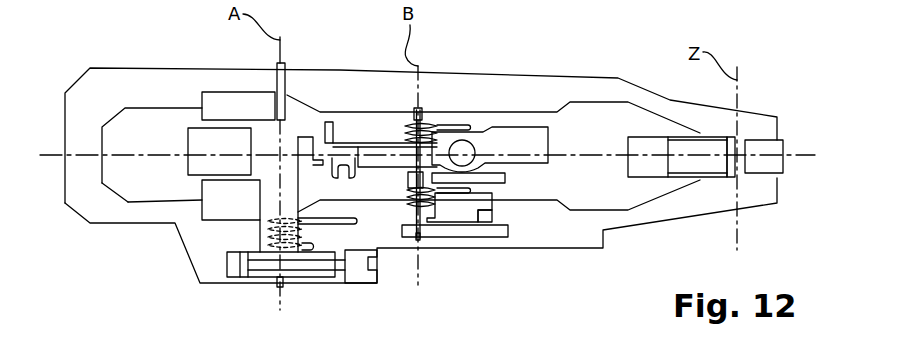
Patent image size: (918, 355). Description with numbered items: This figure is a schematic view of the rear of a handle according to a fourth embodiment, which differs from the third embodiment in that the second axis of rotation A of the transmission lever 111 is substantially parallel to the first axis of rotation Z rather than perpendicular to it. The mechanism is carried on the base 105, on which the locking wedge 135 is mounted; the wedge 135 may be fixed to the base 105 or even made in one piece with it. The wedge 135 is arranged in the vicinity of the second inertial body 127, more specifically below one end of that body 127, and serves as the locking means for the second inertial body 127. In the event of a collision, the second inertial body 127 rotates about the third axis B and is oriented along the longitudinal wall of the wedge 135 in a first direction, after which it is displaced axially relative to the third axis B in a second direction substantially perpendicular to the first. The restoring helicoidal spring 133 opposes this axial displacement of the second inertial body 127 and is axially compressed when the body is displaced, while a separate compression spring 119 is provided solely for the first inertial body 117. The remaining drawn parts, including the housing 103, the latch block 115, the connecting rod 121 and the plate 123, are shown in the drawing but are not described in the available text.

The inner housing 103 is at (523, 112).
The base 105 is at (593, 92).
The transmission lever 111 is at (265, 198).
The latch block 115 is at (265, 233).
The first inertial body 117 is at (540, 160).
The compression spring 119 is at (443, 122).
The connecting rod 121 is at (335, 145).
The plate 123 is at (330, 125).
The second inertial body 127 is at (453, 210).
The restoring helicoidal spring 133 is at (408, 195).
The locking wedge 135 is at (485, 223).